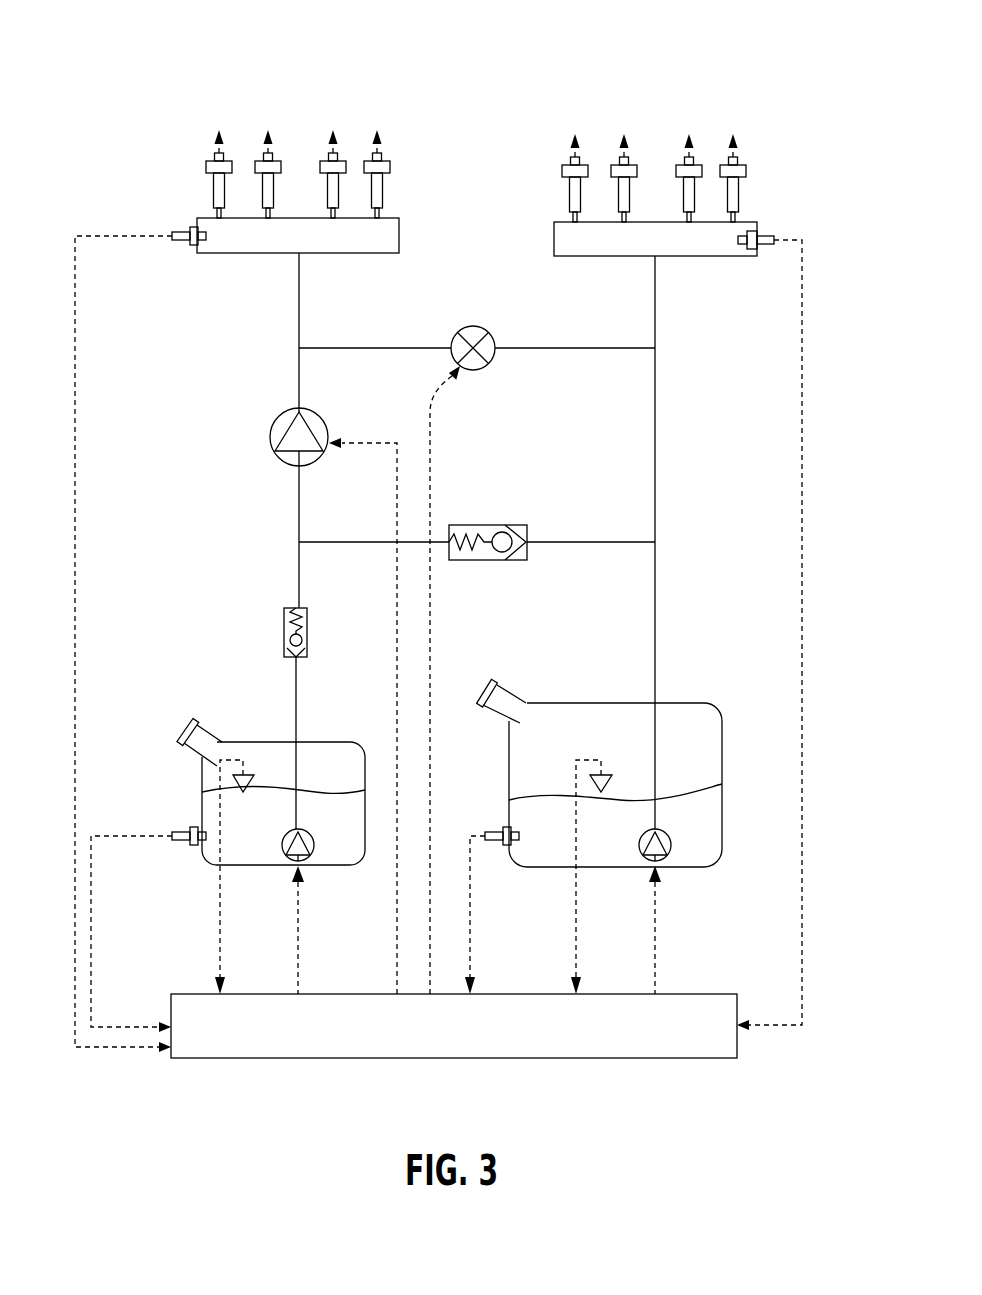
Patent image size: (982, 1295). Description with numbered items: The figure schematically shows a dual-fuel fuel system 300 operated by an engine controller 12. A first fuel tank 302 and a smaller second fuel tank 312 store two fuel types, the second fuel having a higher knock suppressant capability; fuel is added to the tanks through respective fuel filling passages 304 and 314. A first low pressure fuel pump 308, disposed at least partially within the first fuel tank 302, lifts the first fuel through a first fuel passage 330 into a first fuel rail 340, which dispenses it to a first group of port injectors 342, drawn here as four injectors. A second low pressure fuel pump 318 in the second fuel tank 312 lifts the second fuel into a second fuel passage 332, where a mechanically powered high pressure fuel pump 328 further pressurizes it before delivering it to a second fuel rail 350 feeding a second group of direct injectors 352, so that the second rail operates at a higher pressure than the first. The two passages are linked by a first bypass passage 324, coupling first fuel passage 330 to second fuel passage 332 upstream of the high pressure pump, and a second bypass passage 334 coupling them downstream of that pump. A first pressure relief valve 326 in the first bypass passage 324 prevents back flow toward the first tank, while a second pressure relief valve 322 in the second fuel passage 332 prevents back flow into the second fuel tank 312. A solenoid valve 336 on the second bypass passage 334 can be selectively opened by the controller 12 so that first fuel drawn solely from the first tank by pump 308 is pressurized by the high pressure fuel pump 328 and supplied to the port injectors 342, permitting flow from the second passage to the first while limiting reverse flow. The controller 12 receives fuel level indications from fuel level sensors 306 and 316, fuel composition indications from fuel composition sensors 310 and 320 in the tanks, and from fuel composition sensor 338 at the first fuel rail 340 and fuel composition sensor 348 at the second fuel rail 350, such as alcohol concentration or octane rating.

The controller 12 is at (505, 1036).
The fuel system 300 is at (446, 533).
The first fuel tank 302 is at (632, 767).
The fuel filling passage 304 is at (519, 695).
The fuel level sensor 306 is at (603, 854).
The first low pressure fuel pump 308 is at (678, 900).
The fuel composition sensor 310 is at (483, 897).
The second fuel tank 312 is at (289, 789).
The fuel filling passage 314 is at (205, 722).
The fuel level sensor 316 is at (247, 853).
The second low pressure fuel pump 318 is at (320, 901).
The fuel composition sensor 320 is at (148, 916).
The second pressure relief valve 322 is at (321, 718).
The first bypass passage 324 is at (477, 527).
The first pressure relief valve 326 is at (494, 528).
The high pressure fuel pump 328 is at (333, 689).
The first fuel passage 330 is at (681, 542).
The second fuel passage 332 is at (325, 430).
The second bypass passage 334 is at (477, 333).
The solenoid valve 336 is at (479, 646).
The fuel composition sensor 338 is at (777, 616).
The first fuel rail 340 is at (655, 257).
The first group of port injectors 342 is at (654, 168).
The fuel composition sensor 348 is at (140, 625).
The second fuel rail 350 is at (319, 221).
The second group of direct injectors 352 is at (298, 166).